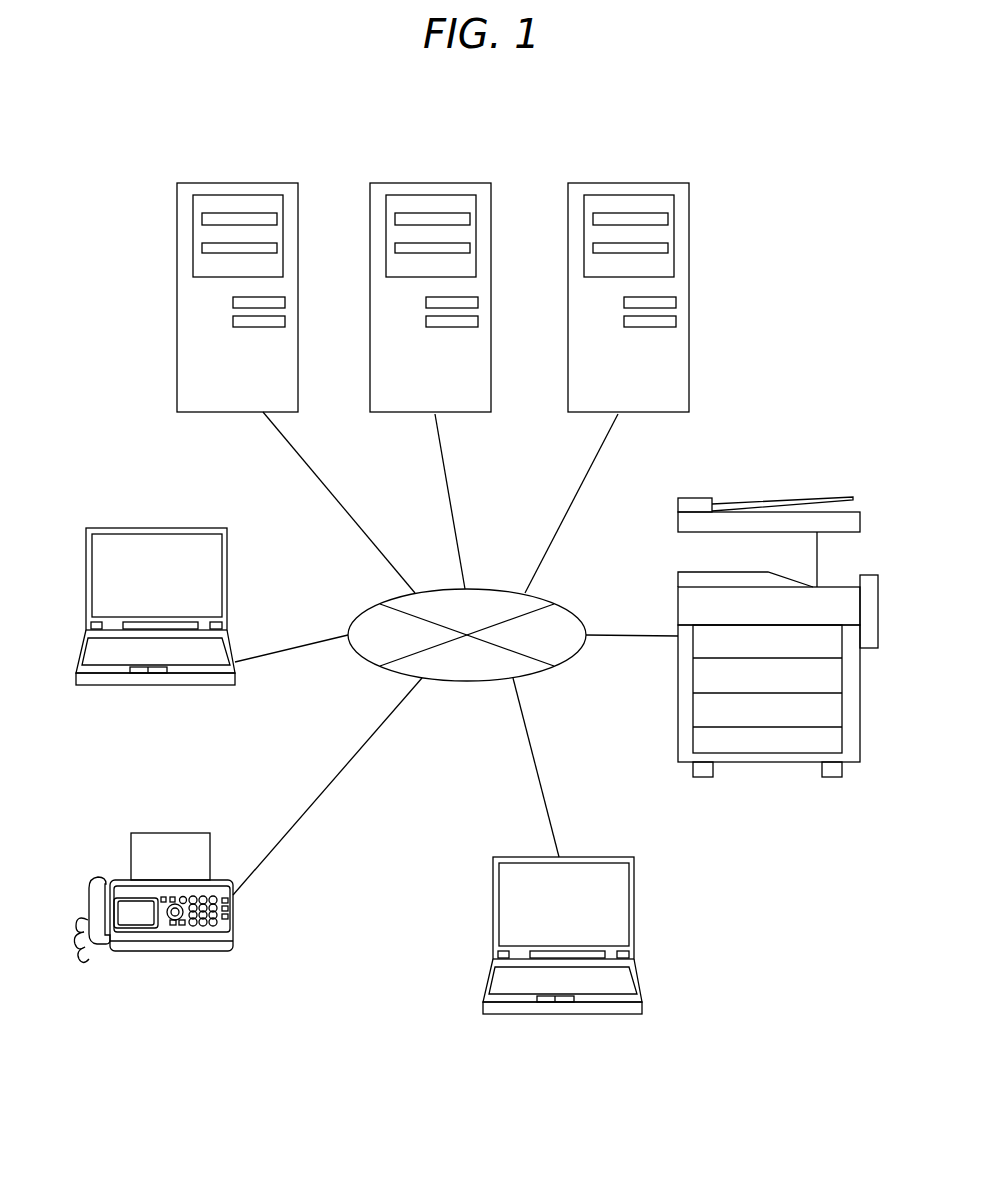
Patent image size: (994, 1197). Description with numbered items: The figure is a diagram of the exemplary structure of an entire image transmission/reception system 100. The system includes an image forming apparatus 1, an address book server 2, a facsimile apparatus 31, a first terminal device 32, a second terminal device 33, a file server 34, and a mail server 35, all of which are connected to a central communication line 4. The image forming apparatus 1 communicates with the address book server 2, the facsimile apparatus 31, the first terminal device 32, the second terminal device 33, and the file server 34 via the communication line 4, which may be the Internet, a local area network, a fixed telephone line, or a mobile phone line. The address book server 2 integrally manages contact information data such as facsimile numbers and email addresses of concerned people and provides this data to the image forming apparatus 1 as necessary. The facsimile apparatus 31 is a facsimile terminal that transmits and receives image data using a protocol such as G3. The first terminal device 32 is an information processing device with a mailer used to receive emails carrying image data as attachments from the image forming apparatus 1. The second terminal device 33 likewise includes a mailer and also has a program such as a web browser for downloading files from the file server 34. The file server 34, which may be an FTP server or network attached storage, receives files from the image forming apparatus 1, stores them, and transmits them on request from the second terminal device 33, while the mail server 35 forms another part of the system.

The image transmission/reception system 100 is at (493, 129).
The image forming apparatus 1 is at (767, 762).
The address book server 2 is at (688, 350).
The communication line 4 is at (463, 682).
The facsimile apparatus 31 is at (177, 951).
The first terminal device 32 is at (570, 1015).
The second terminal device 33 is at (162, 685).
The file server 34 is at (489, 350).
The mail server 35 is at (298, 350).